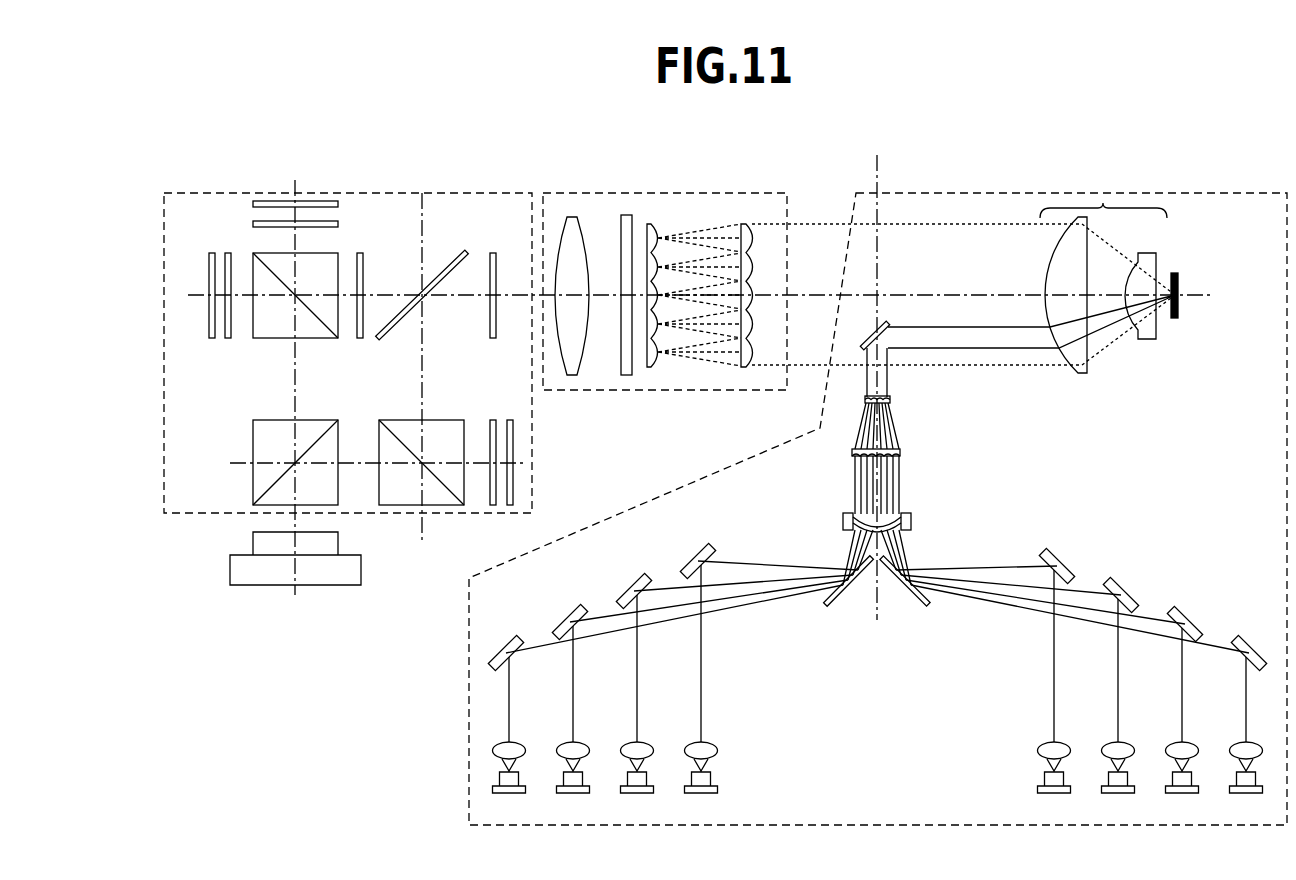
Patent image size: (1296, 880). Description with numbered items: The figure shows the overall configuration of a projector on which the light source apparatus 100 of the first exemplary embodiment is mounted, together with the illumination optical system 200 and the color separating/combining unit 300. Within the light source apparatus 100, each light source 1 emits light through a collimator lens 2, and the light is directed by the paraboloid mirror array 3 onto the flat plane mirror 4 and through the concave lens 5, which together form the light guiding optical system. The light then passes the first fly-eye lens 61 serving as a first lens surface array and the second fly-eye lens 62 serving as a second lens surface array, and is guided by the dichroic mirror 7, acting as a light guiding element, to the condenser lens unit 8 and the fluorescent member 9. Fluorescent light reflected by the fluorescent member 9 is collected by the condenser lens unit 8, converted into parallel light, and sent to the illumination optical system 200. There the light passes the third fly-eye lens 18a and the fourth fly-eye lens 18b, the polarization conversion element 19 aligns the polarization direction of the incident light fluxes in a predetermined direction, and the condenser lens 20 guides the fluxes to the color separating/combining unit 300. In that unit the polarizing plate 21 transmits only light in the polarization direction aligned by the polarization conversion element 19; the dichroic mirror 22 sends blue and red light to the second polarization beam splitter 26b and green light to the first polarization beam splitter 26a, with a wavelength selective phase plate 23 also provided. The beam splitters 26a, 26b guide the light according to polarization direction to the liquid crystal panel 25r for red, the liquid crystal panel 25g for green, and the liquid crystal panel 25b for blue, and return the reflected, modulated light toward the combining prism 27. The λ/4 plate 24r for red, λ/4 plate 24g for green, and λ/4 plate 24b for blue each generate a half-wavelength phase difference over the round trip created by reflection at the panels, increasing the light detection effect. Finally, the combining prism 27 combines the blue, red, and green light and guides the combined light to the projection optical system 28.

The light source 1 is at (718, 790).
The collimator lens 2 is at (718, 752).
The paraboloid mirror array 3 is at (712, 530).
The flat plane mirror 4 is at (851, 592).
The concave lens 5 is at (912, 522).
The dichroic mirror 7 is at (864, 338).
The condenser lens unit 8 is at (1103, 206).
The fluorescent member 9 is at (1180, 305).
The third fly-eye lens 18a is at (744, 225).
The fourth fly-eye lens 18b is at (652, 225).
The polarization conversion element 19 is at (627, 215).
The condenser lens 20 is at (584, 240).
The polarizing plate 21 is at (493, 253).
The dichroic mirror 22 is at (444, 255).
The wavelength selective phase plate 23 is at (361, 253).
The λ/4 plate for red 24r is at (253, 223).
The λ/4 plate for green 24g is at (493, 420).
The λ/4 plate for blue 24b is at (228, 340).
The liquid crystal panel for red 25r is at (275, 201).
The liquid crystal panel for green 25g is at (513, 435).
The liquid crystal panel for blue 25b is at (212, 340).
The first polarization beam splitter 26a is at (442, 430).
The second polarization beam splitter 26b is at (307, 325).
The combining prism 27 is at (312, 428).
The projection optical system 28 is at (314, 557).
The first fly-eye lens 61 is at (901, 453).
The second fly-eye lens 62 is at (891, 400).
The light source apparatus 100 is at (968, 193).
The illumination optical system 200 is at (768, 193).
The color separating/combining unit 300 is at (333, 193).